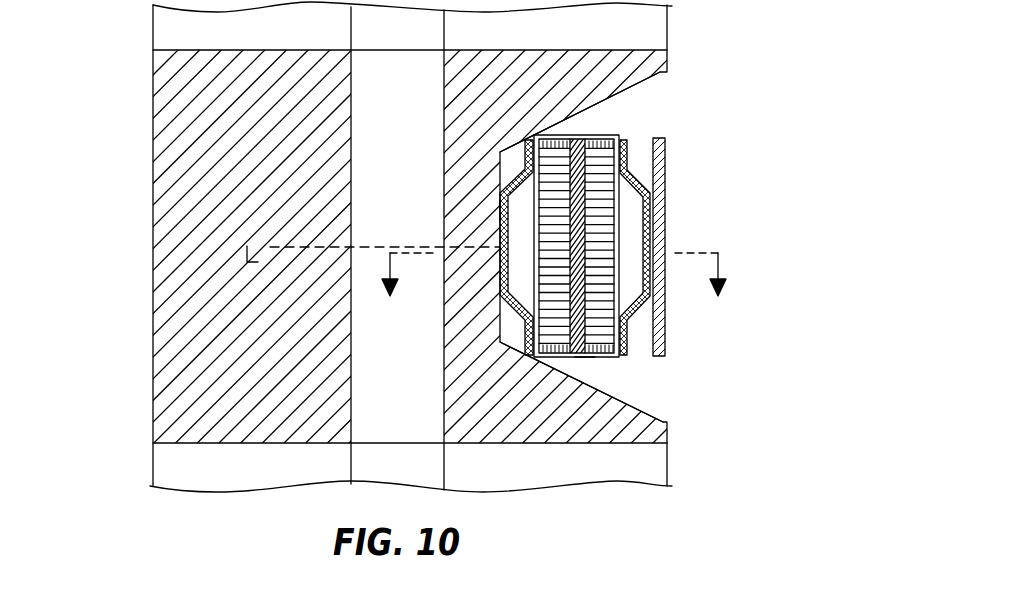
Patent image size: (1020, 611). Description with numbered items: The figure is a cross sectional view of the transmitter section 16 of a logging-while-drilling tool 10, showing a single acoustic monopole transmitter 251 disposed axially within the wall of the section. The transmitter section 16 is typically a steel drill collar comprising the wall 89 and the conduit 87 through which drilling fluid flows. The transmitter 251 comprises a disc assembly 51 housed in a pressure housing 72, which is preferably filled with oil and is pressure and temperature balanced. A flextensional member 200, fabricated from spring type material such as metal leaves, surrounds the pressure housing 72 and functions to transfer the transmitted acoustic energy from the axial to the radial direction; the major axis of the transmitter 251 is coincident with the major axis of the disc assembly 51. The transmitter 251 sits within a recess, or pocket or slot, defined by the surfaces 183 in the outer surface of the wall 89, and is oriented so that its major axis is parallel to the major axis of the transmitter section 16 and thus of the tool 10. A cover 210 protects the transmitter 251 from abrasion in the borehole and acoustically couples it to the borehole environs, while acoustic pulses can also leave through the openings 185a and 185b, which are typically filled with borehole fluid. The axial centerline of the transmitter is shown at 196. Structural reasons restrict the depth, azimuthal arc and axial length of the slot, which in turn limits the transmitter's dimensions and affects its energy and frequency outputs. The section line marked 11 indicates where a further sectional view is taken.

The tool 10 is at (688, 28).
The transmitter section 16 is at (178, 235).
The disc assembly 51 is at (602, 215).
The pressure housing 72 is at (617, 134).
The conduit 87 is at (412, 418).
The wall 89 is at (242, 418).
The surfaces 183 is at (644, 86).
The opening 185a is at (658, 105).
The opening 185b is at (660, 392).
The axial centerline 196 is at (312, 245).
The flextensional member 200 is at (521, 184).
The cover 210 is at (666, 238).
The acoustic monopole transmitter 251 is at (490, 209).
The section line 11- 11 is at (554, 290).